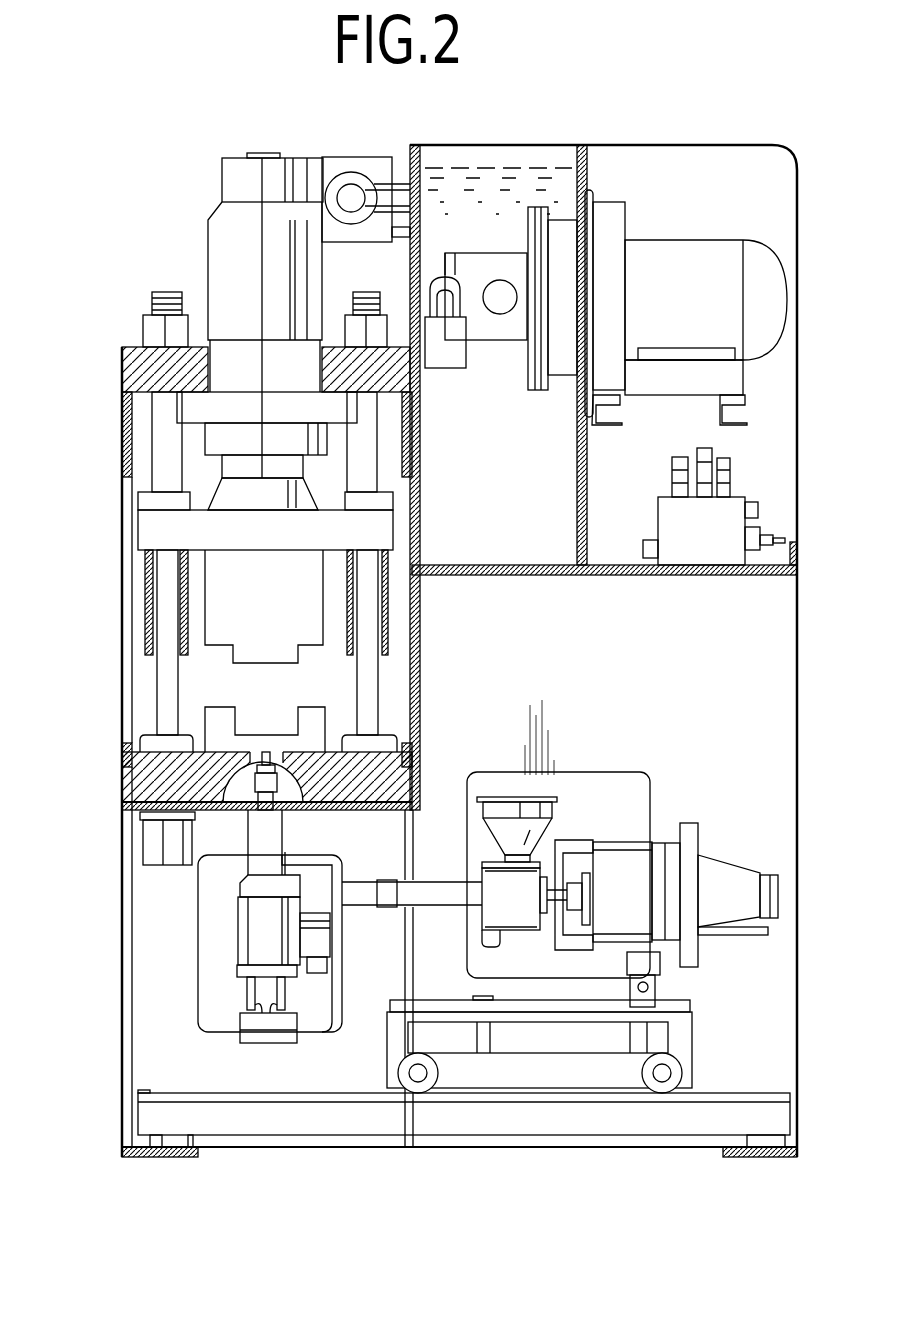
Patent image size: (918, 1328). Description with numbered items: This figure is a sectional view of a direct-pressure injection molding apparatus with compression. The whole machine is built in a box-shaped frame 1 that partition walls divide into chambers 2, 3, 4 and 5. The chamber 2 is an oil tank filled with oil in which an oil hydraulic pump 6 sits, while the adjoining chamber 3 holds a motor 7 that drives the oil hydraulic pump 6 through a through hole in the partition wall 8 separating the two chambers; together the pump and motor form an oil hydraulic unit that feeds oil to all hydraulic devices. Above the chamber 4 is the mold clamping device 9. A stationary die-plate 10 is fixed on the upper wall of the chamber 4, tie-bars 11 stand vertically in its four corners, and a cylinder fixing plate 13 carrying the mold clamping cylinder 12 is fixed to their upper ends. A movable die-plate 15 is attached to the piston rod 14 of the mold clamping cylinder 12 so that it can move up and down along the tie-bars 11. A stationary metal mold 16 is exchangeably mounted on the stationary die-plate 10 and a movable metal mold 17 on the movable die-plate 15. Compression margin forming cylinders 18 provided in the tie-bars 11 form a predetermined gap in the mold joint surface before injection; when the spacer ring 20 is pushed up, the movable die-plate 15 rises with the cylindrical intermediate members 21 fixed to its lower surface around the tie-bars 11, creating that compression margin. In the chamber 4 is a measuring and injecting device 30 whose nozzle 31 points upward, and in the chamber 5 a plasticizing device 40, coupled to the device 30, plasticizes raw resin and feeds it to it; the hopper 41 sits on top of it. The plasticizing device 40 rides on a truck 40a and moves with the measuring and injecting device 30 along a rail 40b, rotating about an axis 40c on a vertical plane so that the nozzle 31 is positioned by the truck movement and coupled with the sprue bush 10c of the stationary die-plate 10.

The frame 1 is at (800, 648).
The chamber 2 is at (488, 188).
The chamber 3 is at (676, 173).
The chamber 4 is at (162, 997).
The chamber 5 is at (767, 797).
The oil hydraulic pump 6 is at (500, 340).
The motor 7 is at (718, 253).
The partition wall 8 is at (590, 172).
The mold clamping device 9 is at (152, 292).
The stationary die-plate 10 is at (122, 776).
The sprue bush 10c is at (123, 793).
The tie-bars 11 is at (157, 612).
The mold clamping cylinder 12 is at (210, 246).
The cylinder fixing plate 13 is at (122, 365).
The piston rod 14 is at (227, 475).
The movable die-plate 15 is at (138, 527).
The stationary metal mold 16 is at (213, 707).
The movable metal mold 17 is at (307, 648).
The compression margin forming cylinders 18 is at (143, 843).
The spacer ring 20 is at (143, 727).
The intermediate members 21 is at (148, 648).
The measuring and injecting device 30 is at (237, 1047).
The nozzle 31 is at (267, 750).
The plasticizing device 40 is at (464, 932).
The truck 40a is at (627, 1080).
The rail 40b is at (362, 1127).
The axis 40c is at (653, 985).
The hopper 41 is at (493, 797).